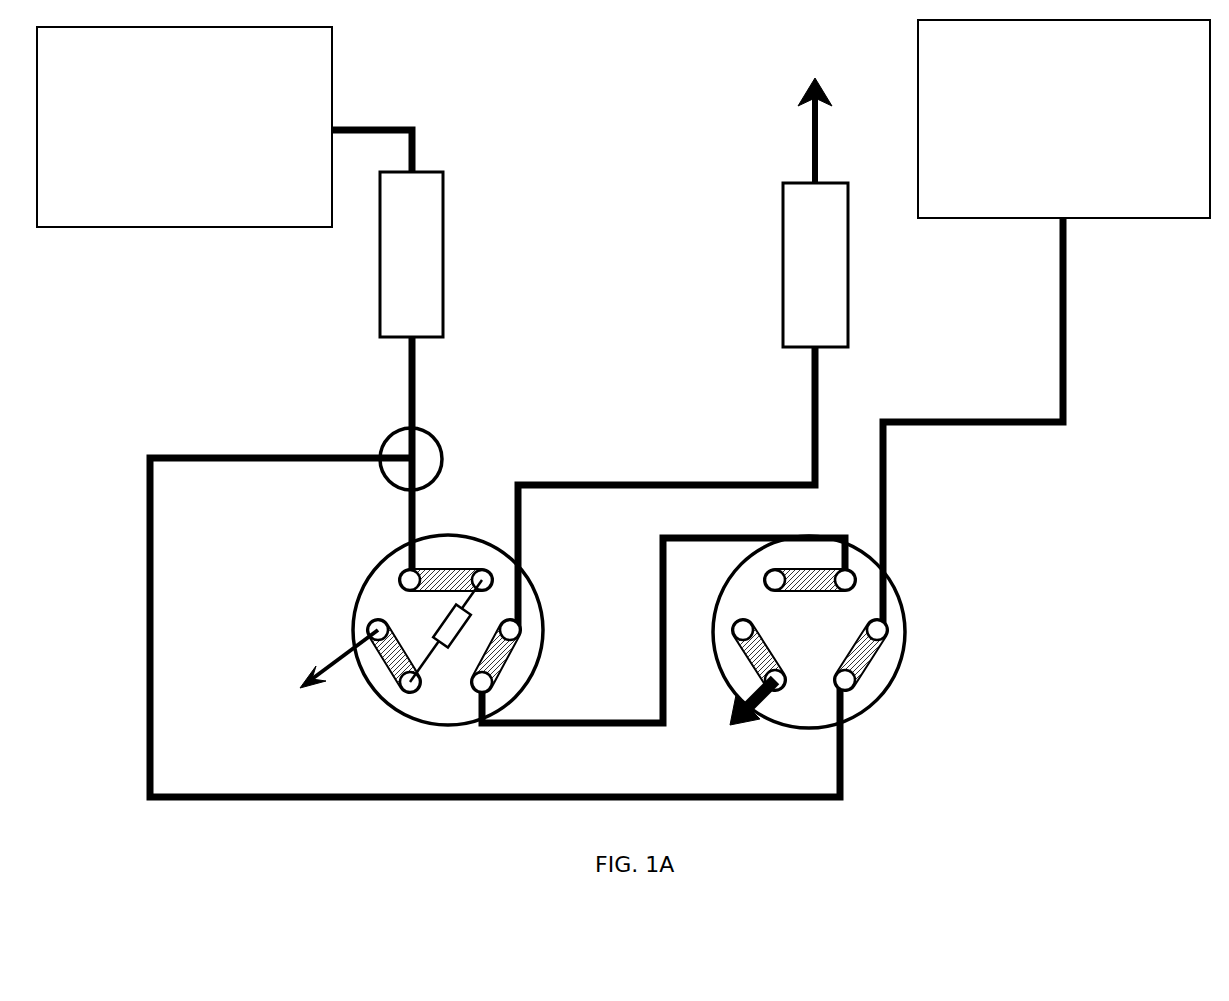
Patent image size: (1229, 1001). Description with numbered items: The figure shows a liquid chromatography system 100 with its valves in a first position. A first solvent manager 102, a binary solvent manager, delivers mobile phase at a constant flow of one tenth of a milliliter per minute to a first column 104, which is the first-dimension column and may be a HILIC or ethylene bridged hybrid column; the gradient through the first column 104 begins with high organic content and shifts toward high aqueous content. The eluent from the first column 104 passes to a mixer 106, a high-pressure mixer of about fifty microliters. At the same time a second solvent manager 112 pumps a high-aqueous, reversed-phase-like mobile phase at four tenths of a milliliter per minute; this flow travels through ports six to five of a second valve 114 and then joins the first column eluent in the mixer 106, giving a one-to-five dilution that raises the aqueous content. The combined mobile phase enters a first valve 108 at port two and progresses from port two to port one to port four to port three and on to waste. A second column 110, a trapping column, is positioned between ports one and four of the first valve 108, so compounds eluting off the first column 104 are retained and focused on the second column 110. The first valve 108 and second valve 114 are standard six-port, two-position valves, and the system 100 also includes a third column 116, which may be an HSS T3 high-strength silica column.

The liquid chromatography system 100 is at (1180, 792).
The first solvent manager 102 is at (140, 228).
The first column 104 is at (380, 294).
The mixer 106 is at (388, 437).
The first valve 108 is at (350, 603).
The second column 110 is at (462, 640).
The second solvent manager 112 is at (970, 219).
The second valve 114 is at (905, 625).
The third column 116 is at (783, 327).